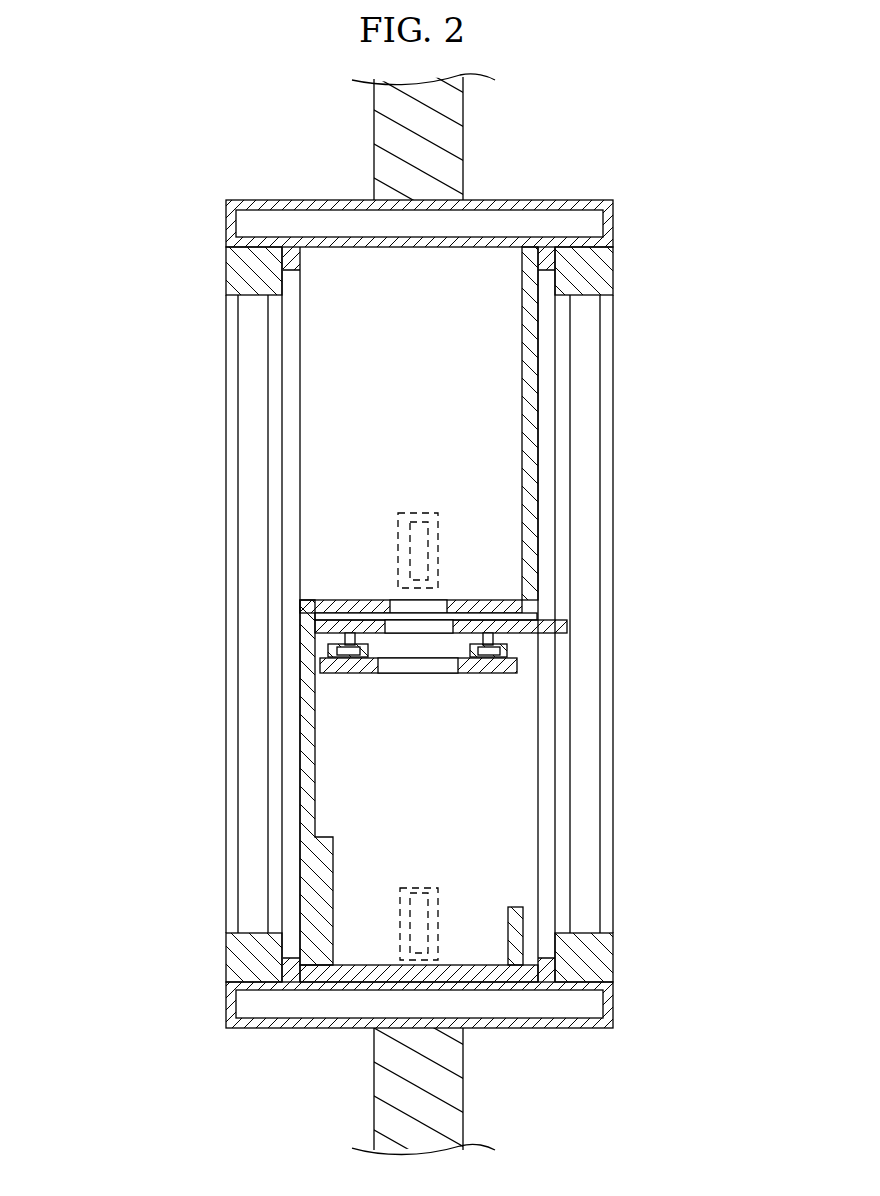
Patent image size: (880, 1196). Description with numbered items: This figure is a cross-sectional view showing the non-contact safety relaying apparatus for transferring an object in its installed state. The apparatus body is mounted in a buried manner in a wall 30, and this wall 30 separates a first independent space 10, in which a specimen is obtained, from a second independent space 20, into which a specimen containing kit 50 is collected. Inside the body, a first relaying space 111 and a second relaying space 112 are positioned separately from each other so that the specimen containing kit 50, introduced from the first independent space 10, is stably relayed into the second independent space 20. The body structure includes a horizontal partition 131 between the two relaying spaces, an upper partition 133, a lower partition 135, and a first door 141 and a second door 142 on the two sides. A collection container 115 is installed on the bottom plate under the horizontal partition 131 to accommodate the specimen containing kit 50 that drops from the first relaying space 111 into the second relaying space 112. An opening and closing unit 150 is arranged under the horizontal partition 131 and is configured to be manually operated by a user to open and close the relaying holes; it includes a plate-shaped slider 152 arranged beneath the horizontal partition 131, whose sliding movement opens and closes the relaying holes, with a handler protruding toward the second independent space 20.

The first independent space 10 is at (65, 560).
The second independent space 20 is at (715, 545).
The wall 30 is at (452, 125).
The specimen containing kit 50 is at (438, 547).
The first relaying space 111 is at (353, 398).
The second relaying space 112 is at (497, 763).
The collection container 115 is at (517, 928).
The horizontal partition 131 is at (340, 605).
The upper partition 133 is at (527, 380).
The lower partition 135 is at (310, 795).
The first door 141 is at (260, 457).
The second door 142 is at (583, 425).
The opening and closing unit 150 is at (523, 650).
The slider 152 is at (552, 632).